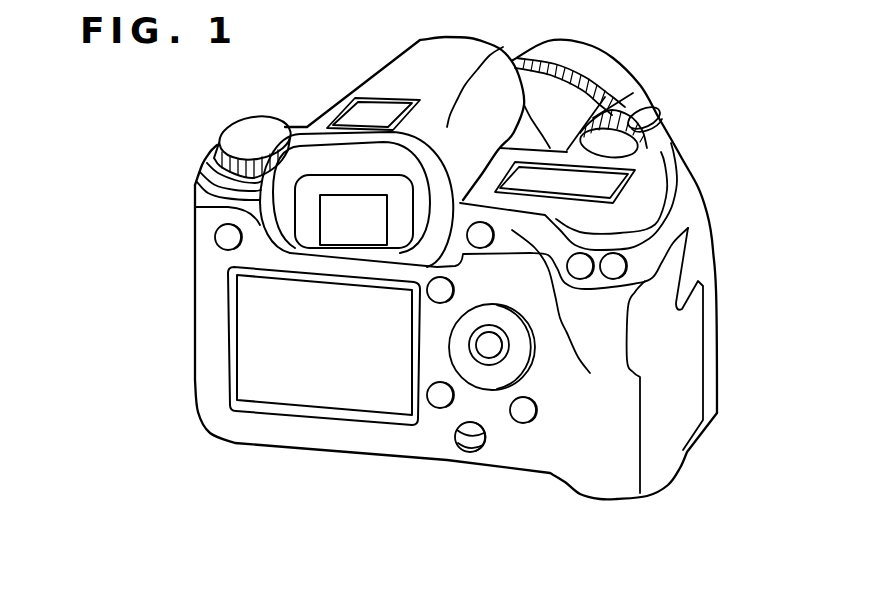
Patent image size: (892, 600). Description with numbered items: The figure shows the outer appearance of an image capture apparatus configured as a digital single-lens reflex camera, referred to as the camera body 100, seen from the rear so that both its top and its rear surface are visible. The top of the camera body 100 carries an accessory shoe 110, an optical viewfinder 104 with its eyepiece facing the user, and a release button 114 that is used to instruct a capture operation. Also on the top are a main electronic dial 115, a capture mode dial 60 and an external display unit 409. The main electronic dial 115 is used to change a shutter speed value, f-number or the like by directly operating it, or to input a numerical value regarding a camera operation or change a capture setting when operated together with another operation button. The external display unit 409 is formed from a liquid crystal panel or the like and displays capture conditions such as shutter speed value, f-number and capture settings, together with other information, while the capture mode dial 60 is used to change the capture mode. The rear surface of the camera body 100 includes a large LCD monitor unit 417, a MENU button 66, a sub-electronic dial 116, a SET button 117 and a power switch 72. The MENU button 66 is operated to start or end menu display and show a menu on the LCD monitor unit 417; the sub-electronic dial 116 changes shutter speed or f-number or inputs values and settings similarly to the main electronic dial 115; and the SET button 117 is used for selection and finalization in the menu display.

The camera body 100 is at (202, 197).
The capture mode dial 60 is at (243, 132).
The optical viewfinder 104 is at (350, 203).
The accessory shoe 110 is at (373, 108).
The main electronic dial 115 is at (623, 102).
The release button 114 is at (650, 114).
The external display unit 409 is at (593, 182).
The SET button 117 is at (495, 353).
The sub-electronic dial 116 is at (493, 383).
The power switch 72 is at (457, 450).
The LCD monitor unit 417 is at (355, 398).
The MENU button 66 is at (215, 235).